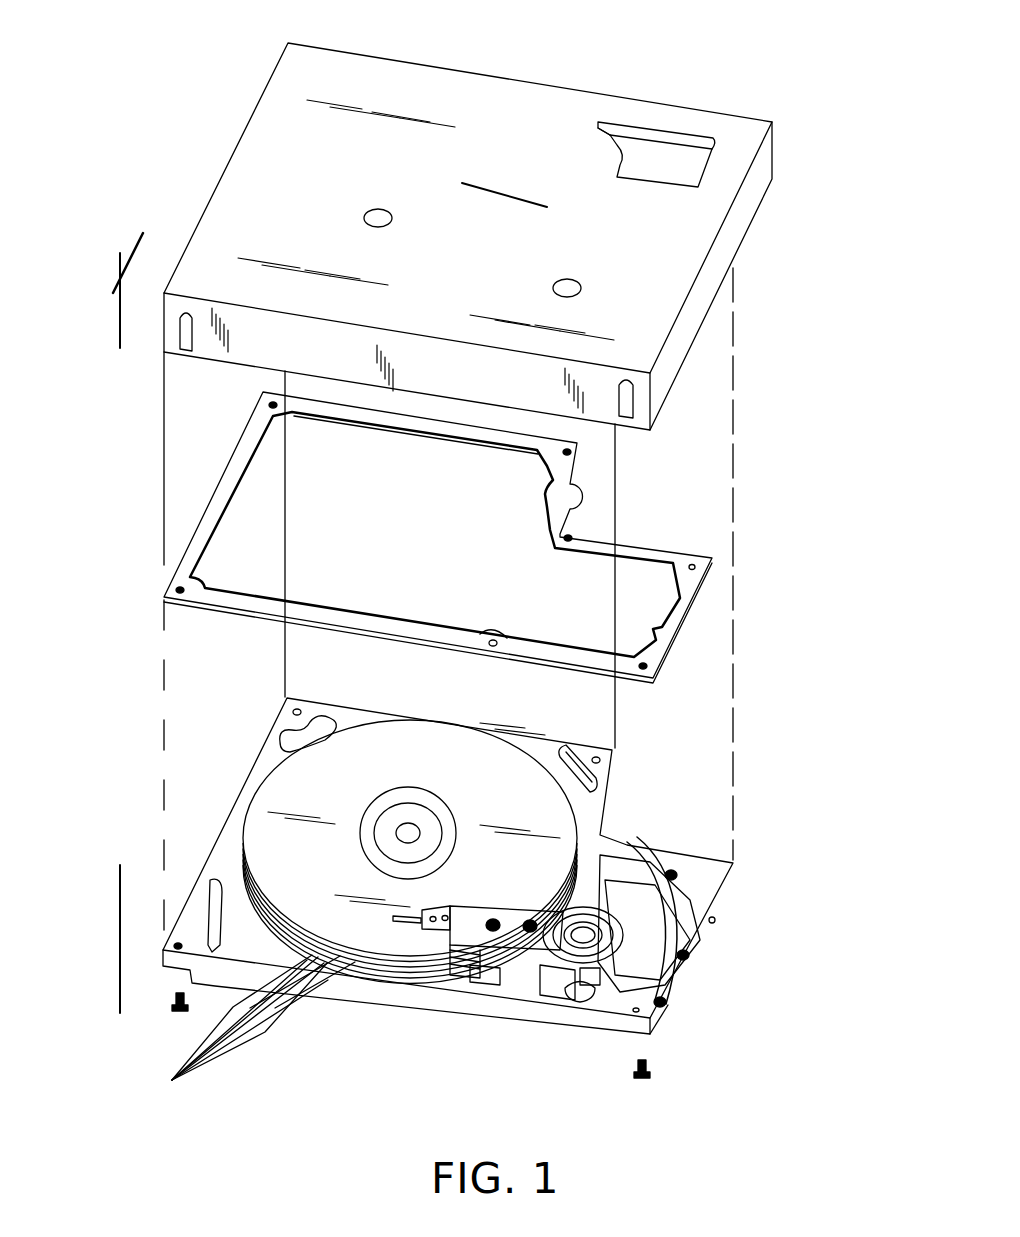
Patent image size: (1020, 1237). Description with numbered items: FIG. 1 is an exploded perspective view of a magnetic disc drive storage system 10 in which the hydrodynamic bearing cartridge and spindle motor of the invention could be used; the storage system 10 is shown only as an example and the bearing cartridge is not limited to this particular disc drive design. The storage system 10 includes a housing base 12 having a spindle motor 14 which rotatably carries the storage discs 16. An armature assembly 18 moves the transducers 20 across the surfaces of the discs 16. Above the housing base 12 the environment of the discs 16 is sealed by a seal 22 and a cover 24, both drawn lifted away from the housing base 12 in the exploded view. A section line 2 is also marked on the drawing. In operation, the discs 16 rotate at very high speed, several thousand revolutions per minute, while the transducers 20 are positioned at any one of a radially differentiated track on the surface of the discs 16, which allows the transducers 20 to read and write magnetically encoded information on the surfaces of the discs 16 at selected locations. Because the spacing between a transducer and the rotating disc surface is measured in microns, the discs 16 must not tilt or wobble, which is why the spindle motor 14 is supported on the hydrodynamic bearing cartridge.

The section line 2- 2 is at (507, 190).
The storage system 10 is at (518, 583).
The housing base 12 is at (695, 945).
The spindle motor 14 is at (378, 834).
The storage discs 16 is at (240, 1039).
The armature assembly 18 is at (482, 985).
The transducers 20 is at (402, 922).
The seal 22 is at (680, 630).
The cover 24 is at (716, 303).